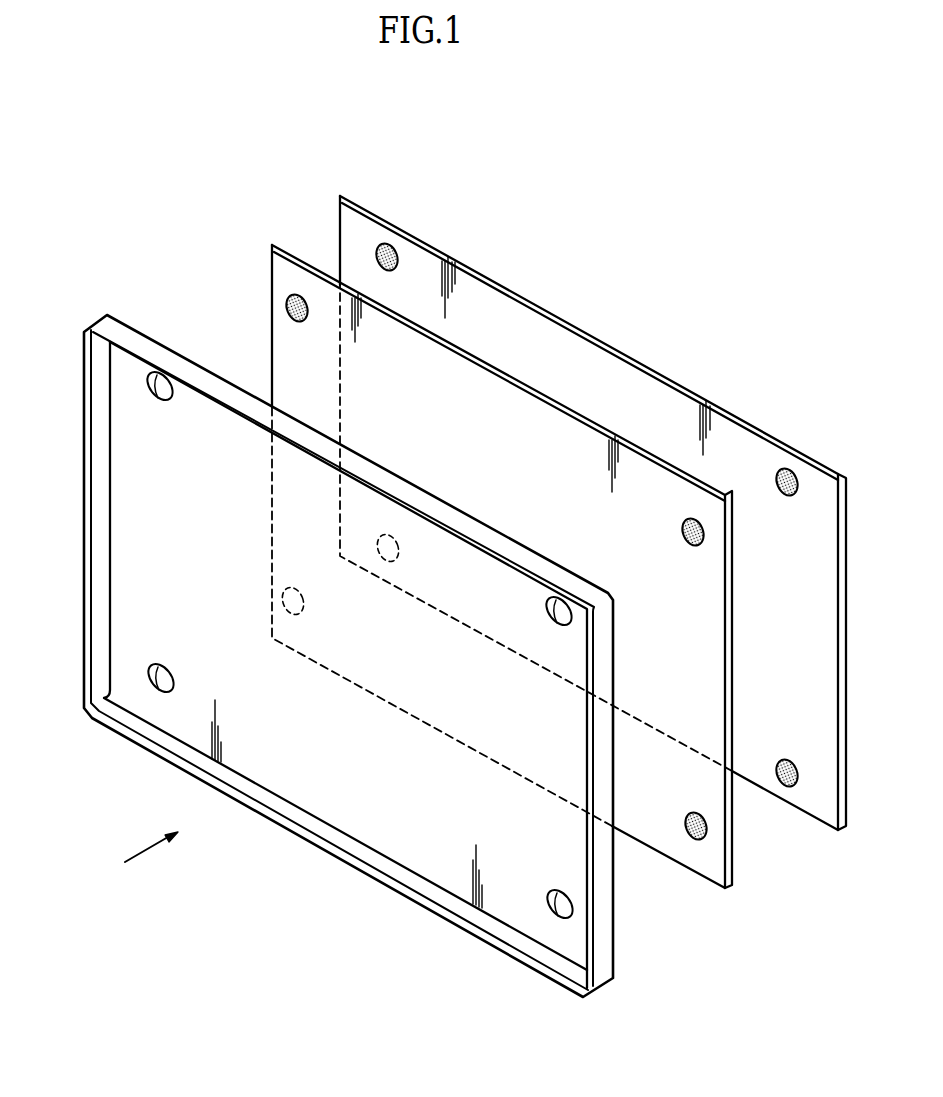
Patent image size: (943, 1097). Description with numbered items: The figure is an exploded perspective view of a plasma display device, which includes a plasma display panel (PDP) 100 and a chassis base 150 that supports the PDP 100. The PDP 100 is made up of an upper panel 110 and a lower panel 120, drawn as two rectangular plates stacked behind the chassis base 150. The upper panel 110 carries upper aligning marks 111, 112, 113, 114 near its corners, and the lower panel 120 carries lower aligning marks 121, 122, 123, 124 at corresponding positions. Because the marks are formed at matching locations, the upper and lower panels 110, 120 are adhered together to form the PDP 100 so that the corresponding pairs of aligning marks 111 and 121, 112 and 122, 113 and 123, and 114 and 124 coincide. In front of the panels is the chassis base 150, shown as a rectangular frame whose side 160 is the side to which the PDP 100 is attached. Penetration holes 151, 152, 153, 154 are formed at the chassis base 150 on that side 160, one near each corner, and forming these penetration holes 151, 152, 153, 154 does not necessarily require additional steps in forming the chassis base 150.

The plasma display panel 100 is at (213, 190).
The upper panel 110 is at (340, 203).
The aligning mark 111 is at (392, 244).
The aligning mark 112 is at (789, 468).
The aligning mark 113 is at (384, 562).
The aligning mark 114 is at (787, 790).
The lower panel 120 is at (272, 248).
The aligning mark 121 is at (286, 306).
The aligning mark 122 is at (682, 530).
The aligning mark 123 is at (291, 615).
The aligning mark 124 is at (692, 840).
The chassis base 150 is at (103, 310).
The penetration hole 151 is at (150, 392).
The penetration hole 152 is at (547, 606).
The penetration hole 153 is at (156, 695).
The penetration hole 154 is at (553, 906).
The side 160 is at (145, 512).